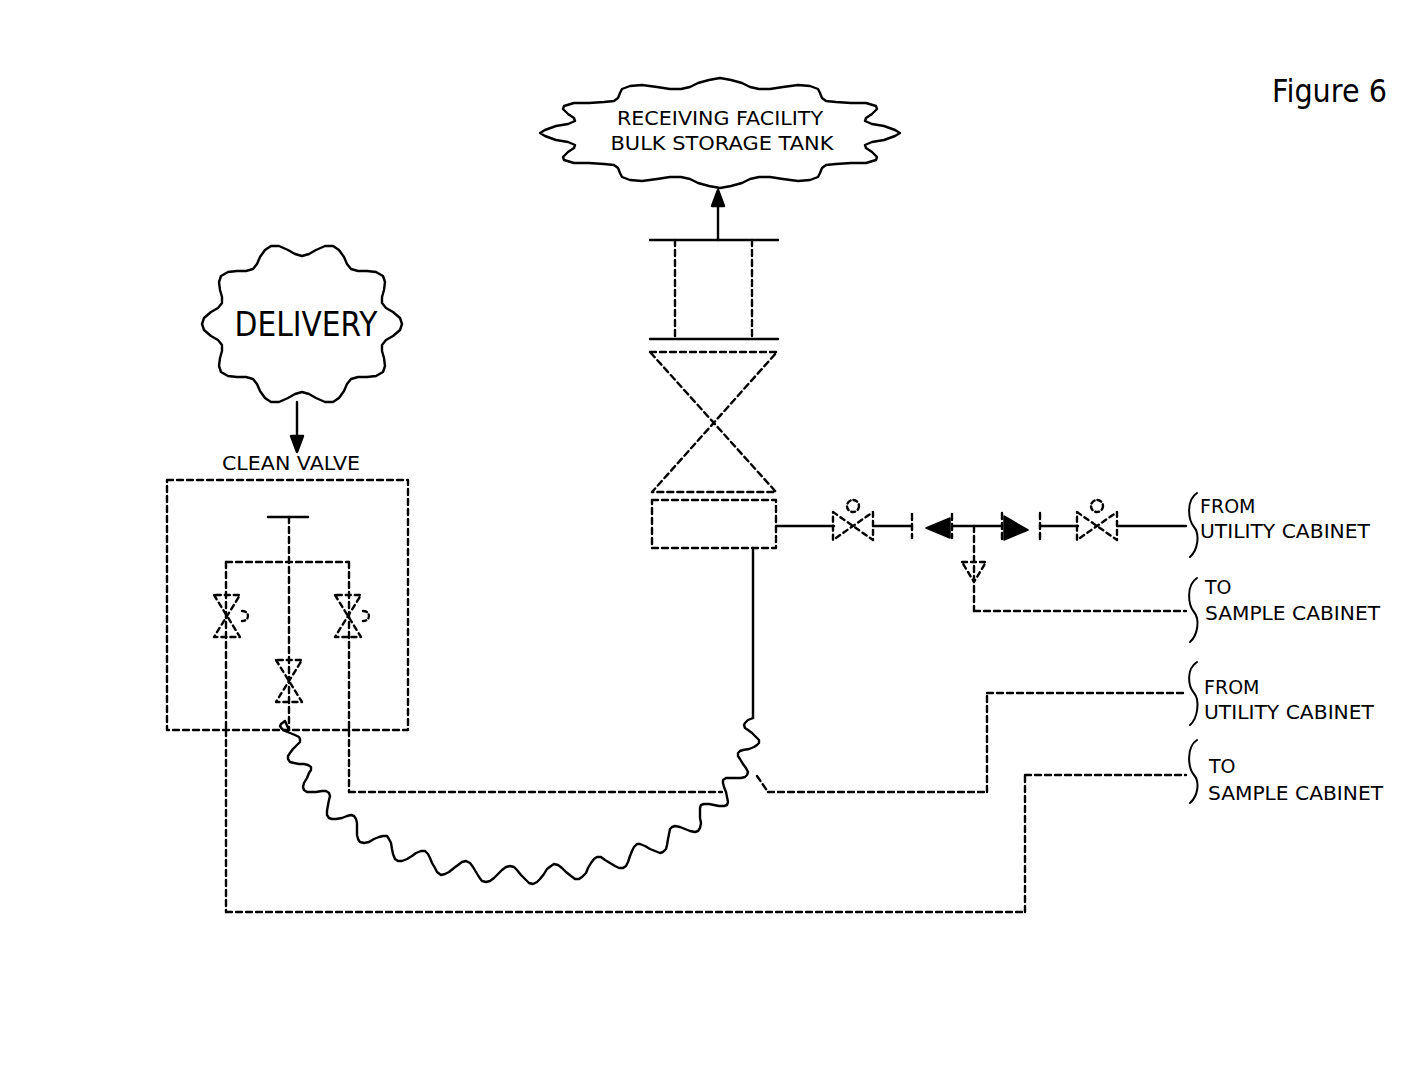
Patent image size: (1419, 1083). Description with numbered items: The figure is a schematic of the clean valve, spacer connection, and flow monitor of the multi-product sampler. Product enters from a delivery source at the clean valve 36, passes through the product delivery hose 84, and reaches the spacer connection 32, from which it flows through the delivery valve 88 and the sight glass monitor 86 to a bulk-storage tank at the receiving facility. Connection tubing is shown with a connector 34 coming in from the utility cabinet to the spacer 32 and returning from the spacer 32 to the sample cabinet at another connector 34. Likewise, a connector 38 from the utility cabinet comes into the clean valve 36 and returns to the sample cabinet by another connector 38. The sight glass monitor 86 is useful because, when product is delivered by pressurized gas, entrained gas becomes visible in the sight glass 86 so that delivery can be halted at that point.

The spacer connection 32 is at (668, 548).
The connector 34 is at (1150, 526).
The clean valve 36 is at (405, 480).
The connector 38 is at (1040, 695).
The product delivery hose 84 is at (640, 850).
The sight glass monitor 86 is at (753, 284).
The delivery valve 88 is at (720, 420).